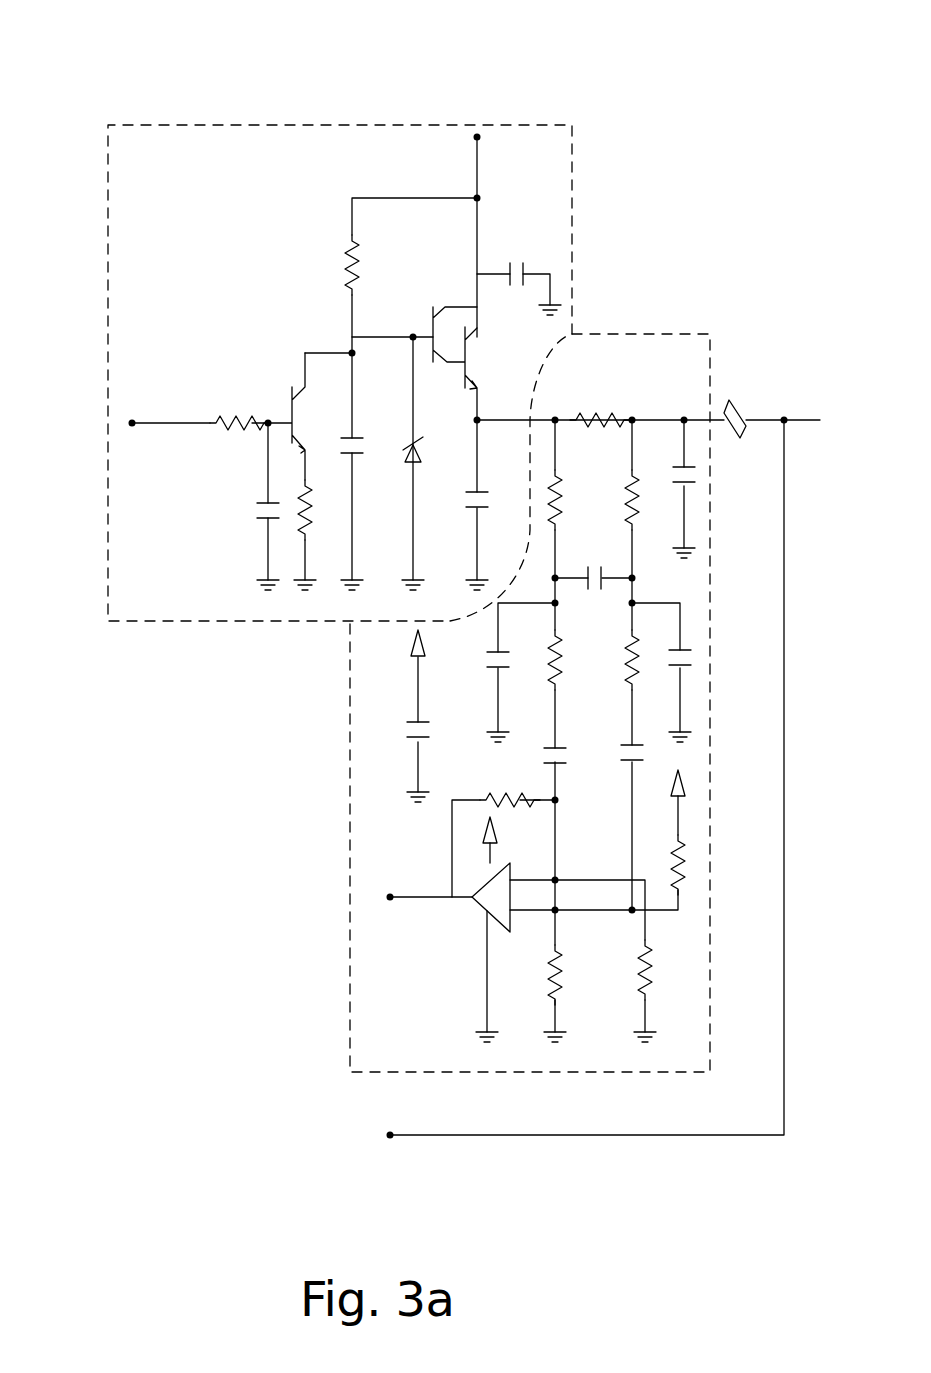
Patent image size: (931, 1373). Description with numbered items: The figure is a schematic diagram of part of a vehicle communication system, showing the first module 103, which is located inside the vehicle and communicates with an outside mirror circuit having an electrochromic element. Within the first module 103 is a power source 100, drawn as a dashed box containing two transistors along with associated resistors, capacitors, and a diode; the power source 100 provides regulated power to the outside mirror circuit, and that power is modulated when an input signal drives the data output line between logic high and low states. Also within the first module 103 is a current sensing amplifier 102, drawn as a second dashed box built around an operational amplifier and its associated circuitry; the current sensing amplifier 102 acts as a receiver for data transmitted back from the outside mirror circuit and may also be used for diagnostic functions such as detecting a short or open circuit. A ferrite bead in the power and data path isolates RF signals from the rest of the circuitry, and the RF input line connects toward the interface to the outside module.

The power source 100 is at (405, 125).
The current sensing amplifier 102 is at (350, 1072).
The first module 103 is at (242, 1035).